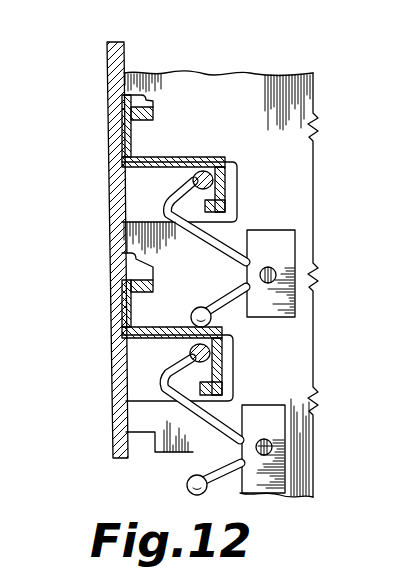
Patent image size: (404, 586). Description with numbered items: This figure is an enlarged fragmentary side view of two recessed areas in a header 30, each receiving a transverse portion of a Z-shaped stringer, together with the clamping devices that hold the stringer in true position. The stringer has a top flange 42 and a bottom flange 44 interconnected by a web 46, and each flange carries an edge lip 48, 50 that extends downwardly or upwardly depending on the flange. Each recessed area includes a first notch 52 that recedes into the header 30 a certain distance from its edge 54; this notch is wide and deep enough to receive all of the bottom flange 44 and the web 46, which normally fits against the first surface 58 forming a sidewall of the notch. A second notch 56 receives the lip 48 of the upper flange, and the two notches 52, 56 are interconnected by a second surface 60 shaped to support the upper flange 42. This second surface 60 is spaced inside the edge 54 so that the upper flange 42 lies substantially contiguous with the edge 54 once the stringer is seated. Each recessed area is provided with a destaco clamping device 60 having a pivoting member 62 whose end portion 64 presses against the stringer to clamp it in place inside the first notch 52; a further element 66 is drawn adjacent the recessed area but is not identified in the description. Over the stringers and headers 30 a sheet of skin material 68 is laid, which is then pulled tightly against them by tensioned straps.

The header 30 is at (224, 78).
The top flange portion 42 is at (122, 320).
The bottom flange portion 44 is at (212, 363).
The web portion 46 is at (157, 340).
The edge lip 48 is at (135, 250).
The edge lip 50 is at (188, 453).
The first notch 52 is at (143, 187).
The edge 54 is at (122, 87).
The second notch 56 is at (143, 90).
The first surface 58 is at (185, 157).
The second surface 60 is at (130, 137).
The pivoting member 62 is at (237, 237).
The end portion 64 is at (215, 240).
The channel leg 66 is at (215, 160).
The skin material 68 is at (108, 59).